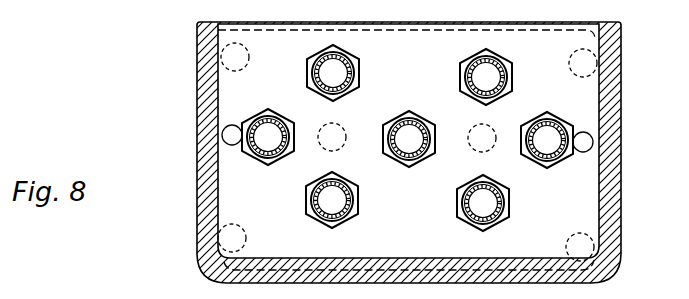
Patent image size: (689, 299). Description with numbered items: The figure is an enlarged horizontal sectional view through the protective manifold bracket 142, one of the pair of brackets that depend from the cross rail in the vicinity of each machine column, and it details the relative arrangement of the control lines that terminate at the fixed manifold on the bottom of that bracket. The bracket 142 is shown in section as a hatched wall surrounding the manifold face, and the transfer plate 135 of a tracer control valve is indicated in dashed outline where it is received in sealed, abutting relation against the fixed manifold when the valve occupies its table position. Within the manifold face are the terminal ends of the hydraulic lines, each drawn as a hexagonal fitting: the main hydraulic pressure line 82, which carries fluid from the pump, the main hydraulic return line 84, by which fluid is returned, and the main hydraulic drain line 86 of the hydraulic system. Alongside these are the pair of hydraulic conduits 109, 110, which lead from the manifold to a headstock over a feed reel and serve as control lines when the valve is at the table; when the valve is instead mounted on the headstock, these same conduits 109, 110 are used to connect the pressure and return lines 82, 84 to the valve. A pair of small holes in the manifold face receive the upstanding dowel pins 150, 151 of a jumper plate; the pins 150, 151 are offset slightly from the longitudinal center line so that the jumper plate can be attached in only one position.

The pressure line 82 is at (490, 213).
The return line 84 is at (337, 208).
The drain line 86 is at (412, 160).
The hydraulic conduit 109 is at (476, 78).
The hydraulic conduit 110 is at (340, 67).
The transfer plate 135 is at (538, 33).
The depending bracket 142 is at (200, 92).
The dowel pin 150 is at (583, 152).
The dowel pin 151 is at (232, 145).